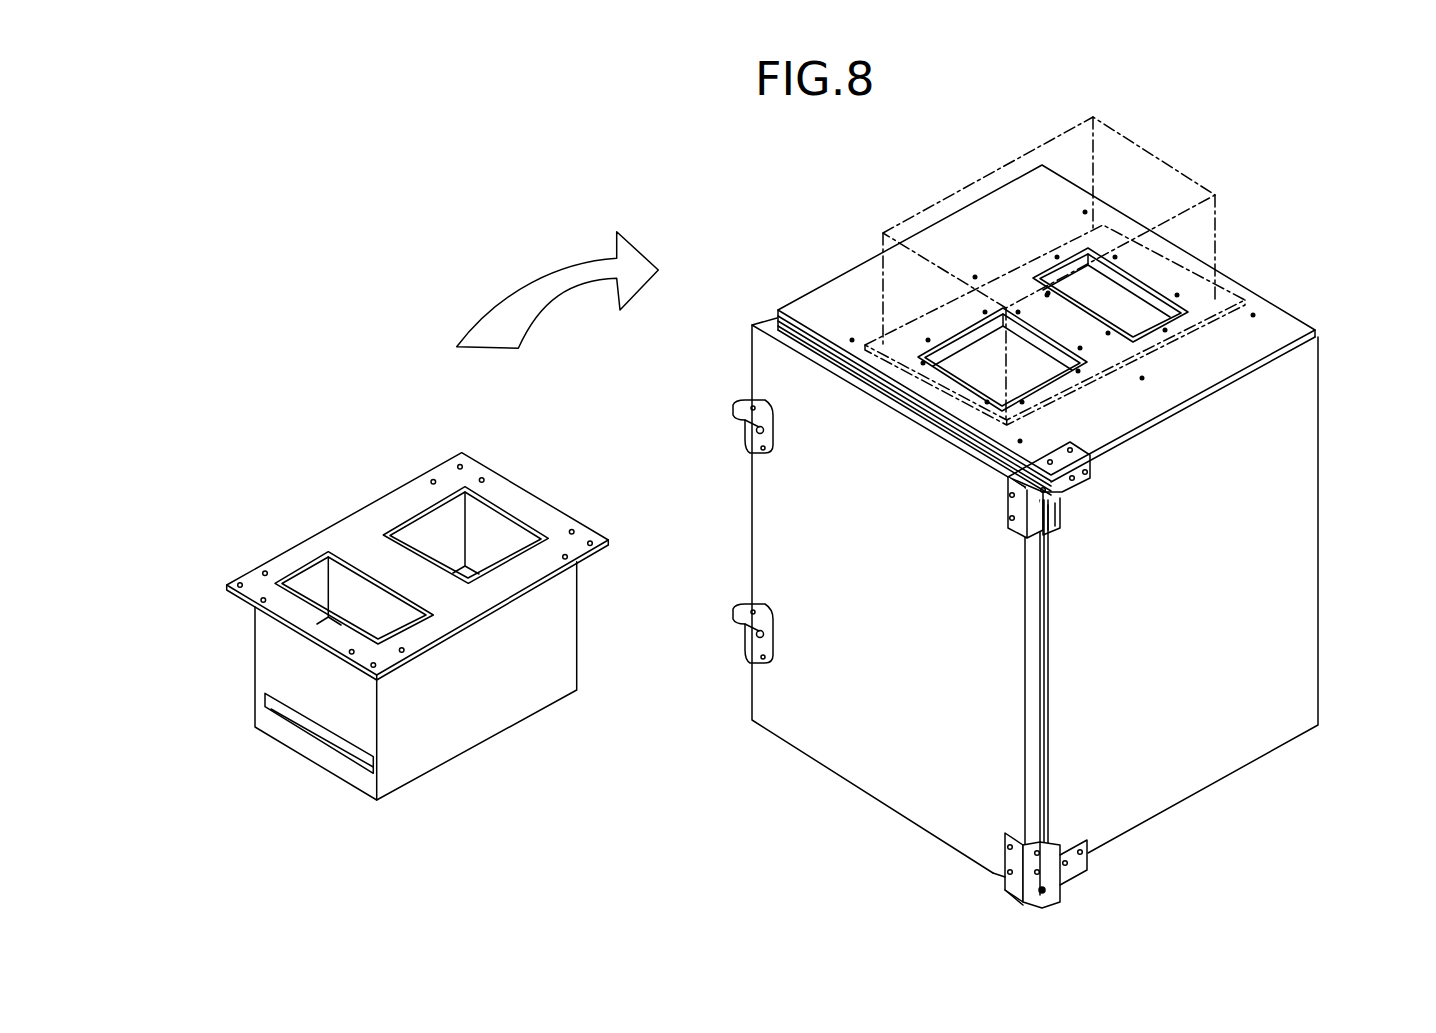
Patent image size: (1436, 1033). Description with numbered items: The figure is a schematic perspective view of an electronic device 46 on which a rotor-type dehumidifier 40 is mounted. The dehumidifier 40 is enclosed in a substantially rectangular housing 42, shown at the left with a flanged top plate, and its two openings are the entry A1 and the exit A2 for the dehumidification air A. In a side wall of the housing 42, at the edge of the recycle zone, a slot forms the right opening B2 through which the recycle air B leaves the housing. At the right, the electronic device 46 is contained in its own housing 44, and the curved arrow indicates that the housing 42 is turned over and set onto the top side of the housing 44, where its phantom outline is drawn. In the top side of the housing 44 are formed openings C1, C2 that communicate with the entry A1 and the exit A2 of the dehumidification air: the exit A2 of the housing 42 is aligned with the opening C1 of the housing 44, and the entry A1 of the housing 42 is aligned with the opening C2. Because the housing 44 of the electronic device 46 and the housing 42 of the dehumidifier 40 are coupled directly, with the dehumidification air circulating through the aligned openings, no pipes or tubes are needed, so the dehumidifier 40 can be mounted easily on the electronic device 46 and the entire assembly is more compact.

The rotor-type dehumidifier 40 is at (724, 480).
The housing 42 is at (450, 705).
The housing 44 is at (1319, 432).
The electronic device 46 is at (1060, 332).
The entry A1 is at (509, 526).
The exit A2 is at (338, 619).
The right opening B2 is at (363, 763).
The opening C1 is at (970, 384).
The opening C2 is at (1132, 332).